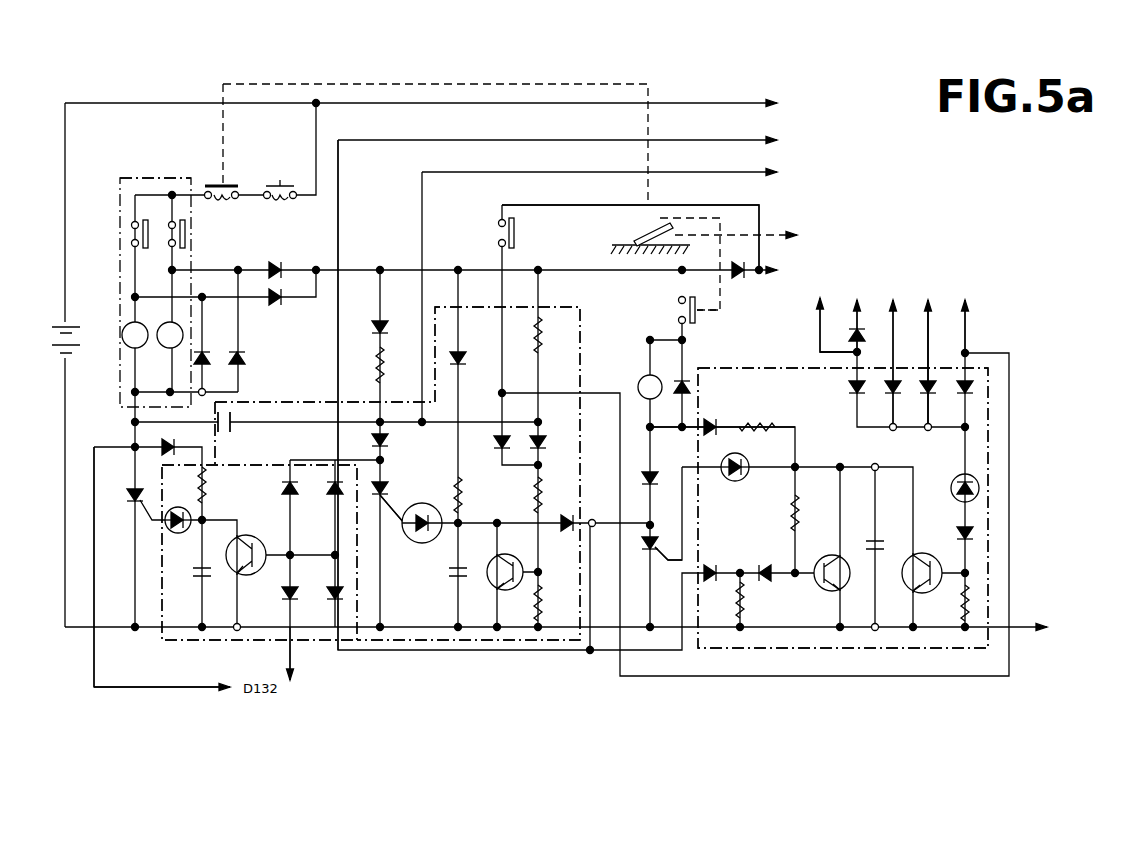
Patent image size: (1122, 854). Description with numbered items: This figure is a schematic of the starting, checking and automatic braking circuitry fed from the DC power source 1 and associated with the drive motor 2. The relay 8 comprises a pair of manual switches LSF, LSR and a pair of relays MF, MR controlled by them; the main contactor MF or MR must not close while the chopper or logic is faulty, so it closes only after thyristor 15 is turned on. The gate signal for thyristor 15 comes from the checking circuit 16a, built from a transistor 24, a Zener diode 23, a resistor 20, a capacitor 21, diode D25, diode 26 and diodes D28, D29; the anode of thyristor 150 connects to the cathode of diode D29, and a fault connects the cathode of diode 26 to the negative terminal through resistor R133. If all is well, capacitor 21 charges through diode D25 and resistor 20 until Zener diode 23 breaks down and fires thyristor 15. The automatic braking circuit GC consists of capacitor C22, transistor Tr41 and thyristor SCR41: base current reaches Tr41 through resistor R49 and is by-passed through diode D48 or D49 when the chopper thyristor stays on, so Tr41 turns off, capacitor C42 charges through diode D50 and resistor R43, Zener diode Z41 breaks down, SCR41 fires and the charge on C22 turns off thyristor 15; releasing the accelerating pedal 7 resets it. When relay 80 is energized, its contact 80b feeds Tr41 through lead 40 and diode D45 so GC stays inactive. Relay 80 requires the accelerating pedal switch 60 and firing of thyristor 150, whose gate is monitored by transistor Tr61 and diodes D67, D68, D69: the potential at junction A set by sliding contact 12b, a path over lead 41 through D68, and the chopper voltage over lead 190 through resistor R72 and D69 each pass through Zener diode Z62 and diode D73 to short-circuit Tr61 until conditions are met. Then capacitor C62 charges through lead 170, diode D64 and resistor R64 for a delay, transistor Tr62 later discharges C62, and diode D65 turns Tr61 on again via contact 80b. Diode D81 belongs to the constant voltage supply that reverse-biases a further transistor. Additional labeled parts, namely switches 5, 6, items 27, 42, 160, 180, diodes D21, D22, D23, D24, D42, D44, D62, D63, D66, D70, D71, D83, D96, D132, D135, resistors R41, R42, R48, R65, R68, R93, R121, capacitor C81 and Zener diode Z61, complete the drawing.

The DC power source 1 is at (52, 343).
The drive motor 2 is at (429, 104).
The switch 5 is at (280, 200).
The switch 6 is at (222, 203).
The accelerating pedal 7 is at (646, 238).
The relay 8 is at (140, 176).
The sliding contact 12b is at (756, 237).
The thyristor 15 is at (128, 493).
The checking circuit 16a is at (218, 649).
The resistor 20 is at (208, 492).
The capacitor 21 is at (192, 578).
The Zener diode 23 is at (180, 533).
The transistor 24 is at (246, 575).
The diode 26 is at (286, 495).
The diode 27 is at (333, 494).
The lead 40 is at (545, 205).
The lead 41 is at (88, 664).
The line 42 is at (360, 140).
The accelerating pedal switch 60 is at (674, 310).
The relay 80 is at (636, 386).
The contact 80b is at (495, 236).
The thyristor 150 is at (645, 548).
The control circuit 160 is at (784, 648).
The lead 170 is at (682, 431).
The line 180 is at (814, 352).
The lead 190 is at (928, 342).
The junction A is at (860, 355).
The automatic braking circuit GC is at (411, 650).
The main contactor relay MF is at (135, 335).
The main contactor relay MR is at (170, 335).
The manual switch LSF is at (147, 242).
The manual switch LSR is at (188, 238).
The diode D21 is at (277, 263).
The diode D22 is at (277, 306).
The diode D23 is at (251, 362).
The diode D24 is at (213, 349).
The diode D25 is at (168, 440).
The capacitor C22 is at (240, 421).
The diode D28 is at (302, 601).
The diode D29 is at (330, 586).
The resistor line R93 is at (304, 660).
The resistor R41 is at (370, 322).
The resistor R42 is at (362, 365).
The diode D42 is at (395, 442).
The thyristor SCR41 is at (388, 488).
The Zener diode Z41 is at (420, 543).
The diode D50 is at (466, 360).
The resistor R43 is at (473, 495).
The capacitor C42 is at (448, 576).
The diode D45 is at (488, 441).
The diode D44 is at (552, 441).
The resistor R48 is at (553, 335).
The resistor R49 is at (553, 495).
The transistor Tr41 is at (522, 558).
The diode D49 is at (562, 532).
The diode D48 is at (632, 173).
The resistor R133 is at (578, 141).
The diode D81 is at (492, 270).
The diode D83 is at (720, 288).
The capacitor line C81 is at (577, 629).
The diode D62 is at (670, 478).
The diode D63 is at (690, 390).
The diode D64 is at (712, 422).
The resistor R64 is at (766, 417).
The zener diode Z61 is at (730, 482).
The diode D70 is at (704, 563).
The diode D71 is at (776, 558).
The resistor R65 is at (744, 604).
The transistor Tr62 is at (826, 558).
The capacitor C62 is at (884, 540).
The transistor Tr61 is at (940, 560).
The resistor R68 is at (960, 608).
The diode D66 is at (848, 340).
The diode D67 is at (849, 390).
The diode D68 is at (885, 390).
The diode D69 is at (921, 390).
The diode D65 is at (959, 390).
The Zener diode Z62 is at (956, 478).
The diode D73 is at (977, 530).
The diode line D96 is at (856, 317).
The resistor R72 is at (929, 355).
The diode line D132 is at (895, 355).
The diode line D135 is at (970, 318).
The resistor line R121 is at (821, 325).